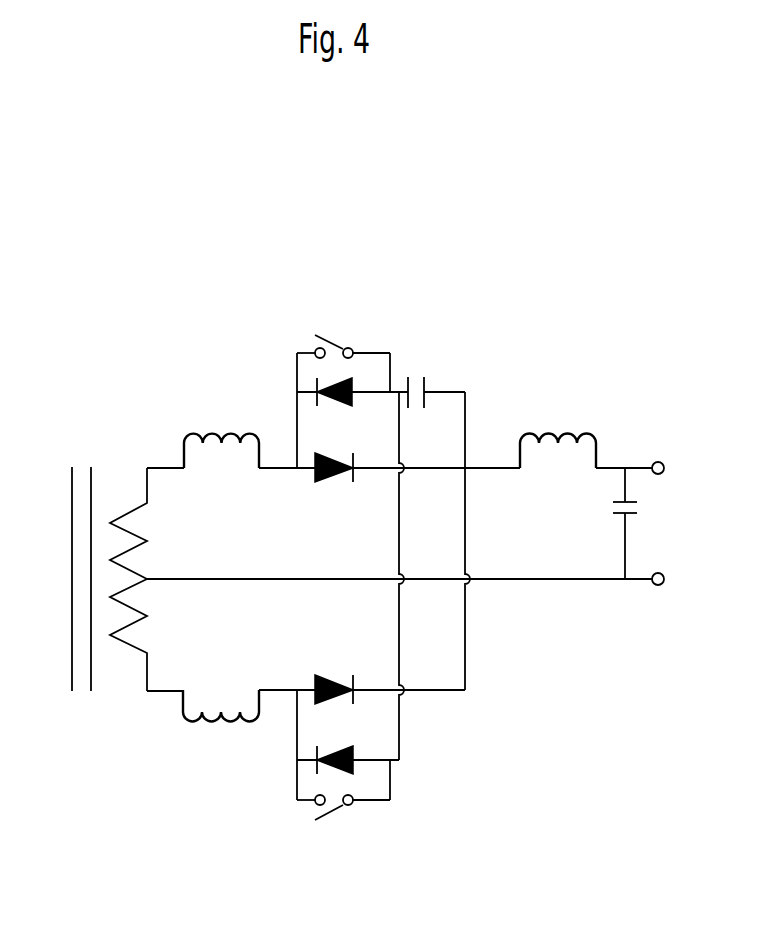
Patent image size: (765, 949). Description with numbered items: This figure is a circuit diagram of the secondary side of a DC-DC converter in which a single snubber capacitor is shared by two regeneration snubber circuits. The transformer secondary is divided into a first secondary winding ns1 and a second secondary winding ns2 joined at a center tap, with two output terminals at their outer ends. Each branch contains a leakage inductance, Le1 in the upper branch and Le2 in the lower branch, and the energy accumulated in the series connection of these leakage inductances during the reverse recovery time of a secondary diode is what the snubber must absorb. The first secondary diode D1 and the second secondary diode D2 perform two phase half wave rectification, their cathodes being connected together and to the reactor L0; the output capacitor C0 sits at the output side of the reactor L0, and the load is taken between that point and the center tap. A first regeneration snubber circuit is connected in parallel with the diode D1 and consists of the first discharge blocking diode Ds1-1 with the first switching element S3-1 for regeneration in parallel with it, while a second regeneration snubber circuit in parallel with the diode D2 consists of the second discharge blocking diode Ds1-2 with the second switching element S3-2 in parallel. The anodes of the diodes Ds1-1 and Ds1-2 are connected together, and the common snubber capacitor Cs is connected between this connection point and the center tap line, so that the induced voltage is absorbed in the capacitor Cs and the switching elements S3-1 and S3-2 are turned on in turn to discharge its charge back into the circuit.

The first secondary winding ns1 is at (149, 523).
The second secondary winding ns2 is at (149, 635).
The leakage inductance Le1 is at (221, 433).
The leakage inductance Le2 is at (221, 722).
The first secondary diode D1 is at (346, 486).
The second secondary diode D2 is at (353, 676).
The first discharge blocking diode Ds1-1 is at (352, 409).
The second discharge blocking diode Ds1-2 is at (348, 745).
The first switching element for regeneration S3-1 is at (343, 327).
The second switching element for regeneration S3-2 is at (343, 827).
The snubber capacitor Cs is at (436, 377).
The reactor L0 is at (558, 426).
The output capacitor C0 is at (640, 523).